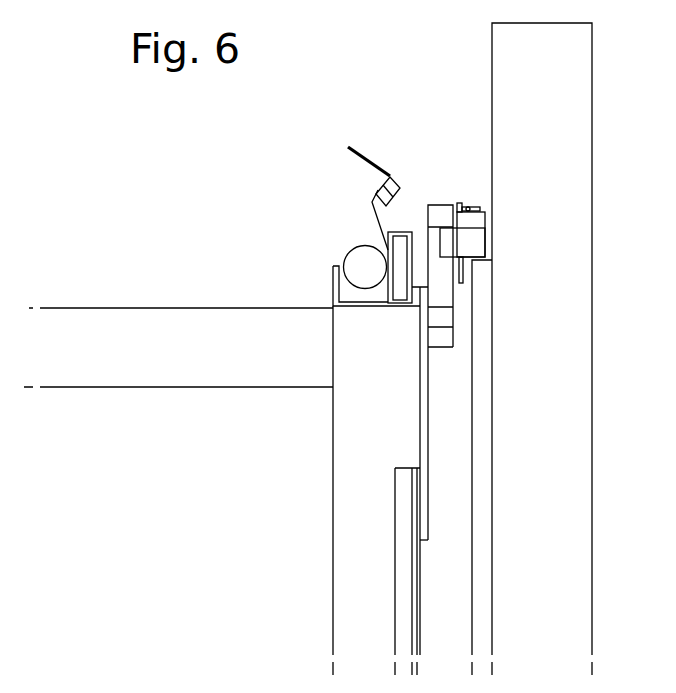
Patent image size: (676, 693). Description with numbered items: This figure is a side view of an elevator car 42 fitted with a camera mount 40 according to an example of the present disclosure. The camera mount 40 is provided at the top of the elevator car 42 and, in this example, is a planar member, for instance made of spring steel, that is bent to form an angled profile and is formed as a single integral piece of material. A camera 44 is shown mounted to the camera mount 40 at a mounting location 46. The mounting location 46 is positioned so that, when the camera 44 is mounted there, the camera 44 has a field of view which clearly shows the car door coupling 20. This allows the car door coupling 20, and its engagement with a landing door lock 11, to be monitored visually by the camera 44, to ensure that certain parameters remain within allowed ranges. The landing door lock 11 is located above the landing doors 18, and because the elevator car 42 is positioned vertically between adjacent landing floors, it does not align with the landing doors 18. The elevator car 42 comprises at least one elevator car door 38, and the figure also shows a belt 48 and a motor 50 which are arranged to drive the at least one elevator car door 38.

The landing door lock 11 is at (475, 195).
The landing doors 18 is at (483, 293).
The car door coupling 20 is at (440, 203).
The elevator car door 38 is at (405, 645).
The camera mount 40 is at (373, 223).
The elevator car 42 is at (80, 288).
The camera 44 is at (398, 192).
The mounting location 46 is at (385, 185).
The belt 48 is at (398, 293).
The motor 50 is at (352, 262).